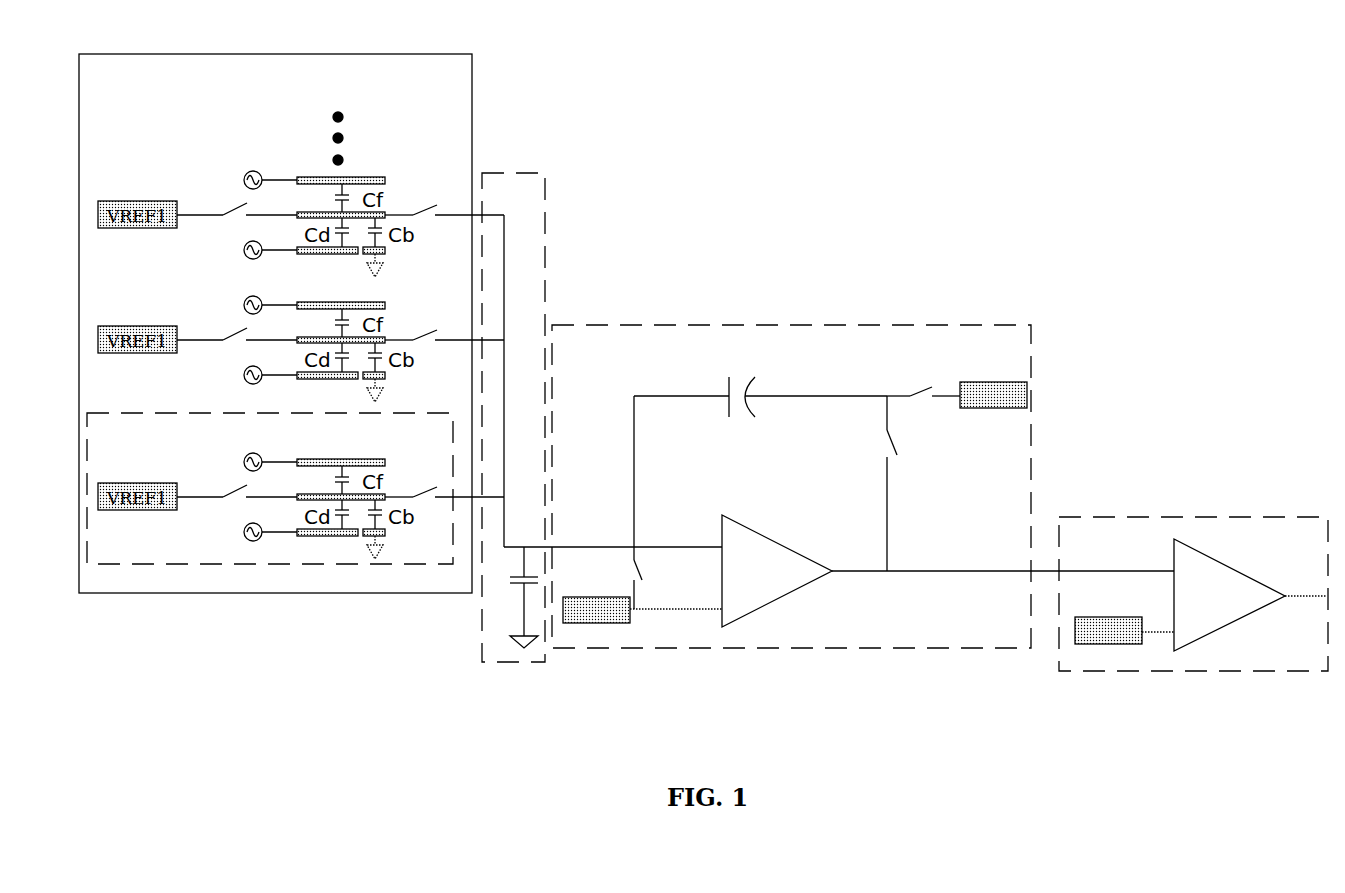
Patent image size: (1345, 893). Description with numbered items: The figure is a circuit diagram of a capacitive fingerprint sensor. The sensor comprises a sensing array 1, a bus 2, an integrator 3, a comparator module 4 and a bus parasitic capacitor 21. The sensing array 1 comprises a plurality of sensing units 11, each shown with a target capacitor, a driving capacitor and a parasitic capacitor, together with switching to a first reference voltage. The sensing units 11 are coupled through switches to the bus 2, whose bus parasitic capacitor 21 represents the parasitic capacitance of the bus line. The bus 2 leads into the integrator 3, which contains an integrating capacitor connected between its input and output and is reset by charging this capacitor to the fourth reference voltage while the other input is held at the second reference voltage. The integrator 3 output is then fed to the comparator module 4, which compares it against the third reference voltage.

The sensing array 1 is at (291, 363).
The sensing unit 11 is at (122, 564).
The bus 2 is at (602, 464).
The bus parasitic capacitor 21 is at (535, 593).
The integrator 3 is at (818, 649).
The comparator module 4 is at (1157, 671).